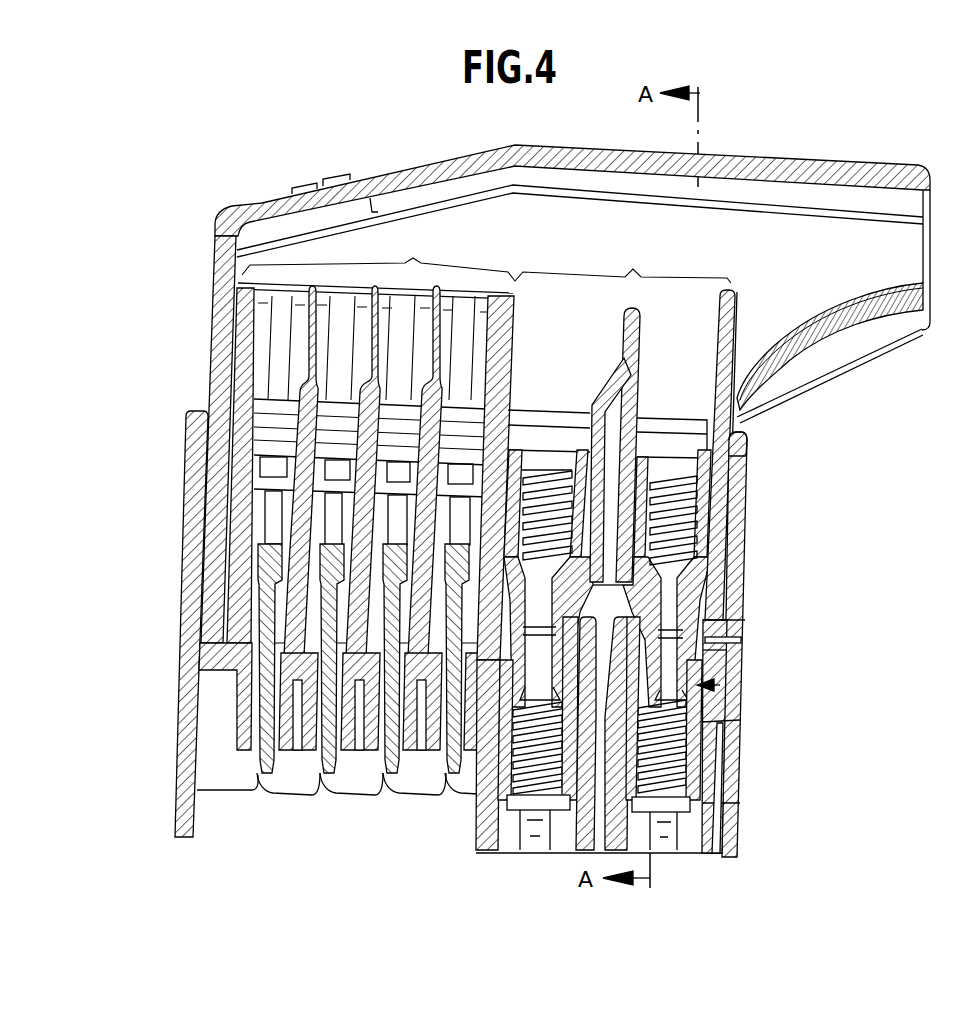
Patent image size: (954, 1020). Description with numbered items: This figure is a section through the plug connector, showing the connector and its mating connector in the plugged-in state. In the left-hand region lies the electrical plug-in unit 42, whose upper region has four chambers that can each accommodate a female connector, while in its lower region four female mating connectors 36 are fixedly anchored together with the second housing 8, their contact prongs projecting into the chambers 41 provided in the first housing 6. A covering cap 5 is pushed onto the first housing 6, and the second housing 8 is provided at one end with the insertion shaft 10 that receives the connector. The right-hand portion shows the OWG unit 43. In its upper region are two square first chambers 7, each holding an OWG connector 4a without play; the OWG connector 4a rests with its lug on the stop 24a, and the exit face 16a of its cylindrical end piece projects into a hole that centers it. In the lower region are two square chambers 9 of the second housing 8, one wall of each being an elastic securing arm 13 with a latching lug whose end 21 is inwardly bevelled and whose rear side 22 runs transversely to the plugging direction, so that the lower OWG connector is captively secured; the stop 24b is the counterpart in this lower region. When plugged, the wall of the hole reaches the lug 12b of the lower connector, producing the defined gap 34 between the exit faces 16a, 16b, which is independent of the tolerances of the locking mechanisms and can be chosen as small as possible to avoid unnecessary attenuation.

The OWG connector 4a is at (748, 483).
The covering cap 5 is at (272, 205).
The first housing 6 is at (746, 460).
The first chambers 7 is at (569, 380).
The second housing 8 is at (747, 530).
The second chambers 9 is at (590, 849).
The insertion shaft 10 is at (206, 412).
The lug 12b is at (740, 700).
The elastic securing arm 13 is at (740, 840).
The exit face 16a is at (743, 632).
The exit face 16b is at (743, 653).
The end of latching lug 21 is at (686, 853).
The rear side of latching lug 22 is at (740, 800).
The stop 24a is at (747, 575).
The lower wall section 24b is at (740, 753).
The gap 34 is at (743, 640).
The female mating connectors 36 is at (258, 585).
The chambers 41 is at (262, 484).
The electrical plug-in unit 42 is at (464, 516).
The OWG unit 43 is at (594, 477).